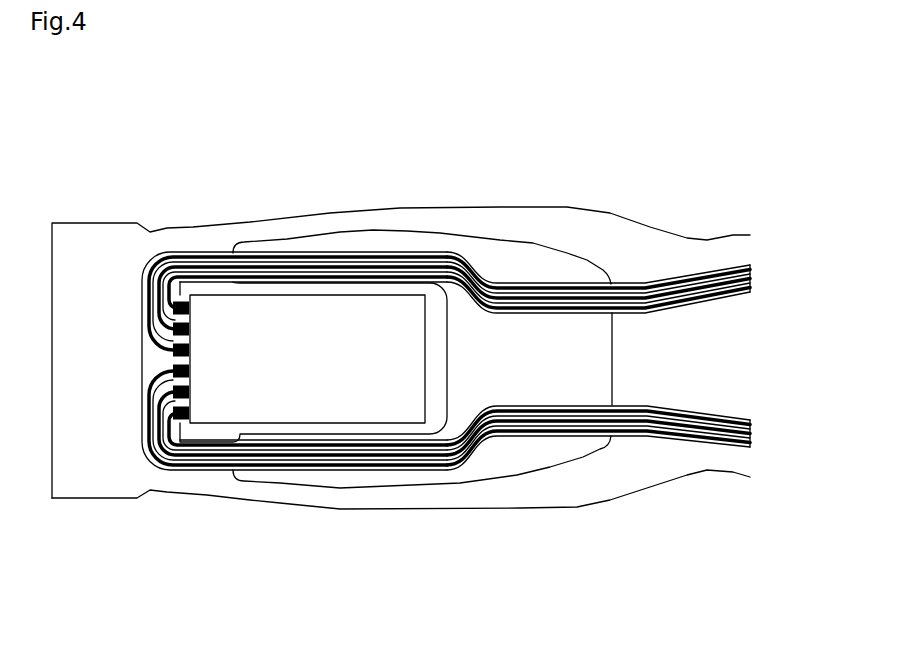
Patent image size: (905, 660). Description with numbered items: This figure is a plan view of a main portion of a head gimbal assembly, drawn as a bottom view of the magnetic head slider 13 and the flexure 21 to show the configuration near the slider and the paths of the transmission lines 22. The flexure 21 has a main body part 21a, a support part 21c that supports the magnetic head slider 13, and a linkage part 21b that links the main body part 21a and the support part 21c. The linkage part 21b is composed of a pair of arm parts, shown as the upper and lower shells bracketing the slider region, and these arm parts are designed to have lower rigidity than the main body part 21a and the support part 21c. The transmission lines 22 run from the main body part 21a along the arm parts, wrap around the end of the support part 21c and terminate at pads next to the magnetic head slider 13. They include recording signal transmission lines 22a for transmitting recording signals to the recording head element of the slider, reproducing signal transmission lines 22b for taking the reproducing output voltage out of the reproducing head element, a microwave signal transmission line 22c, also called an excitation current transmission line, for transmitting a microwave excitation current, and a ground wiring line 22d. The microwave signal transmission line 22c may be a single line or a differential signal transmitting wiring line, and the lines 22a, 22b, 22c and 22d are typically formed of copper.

The magnetic head slider 13 is at (323, 358).
The flexure 21 is at (105, 258).
The main body part 21a is at (658, 357).
The linkage part 21b is at (475, 220).
The support part 21c is at (437, 357).
The transmission lines 22 is at (456, 355).
The recording signal transmission lines 22a is at (574, 307).
The reproducing signal transmission lines 22b is at (555, 427).
The microwave signal transmission line 22c is at (530, 427).
The ground wiring line 22d is at (530, 287).